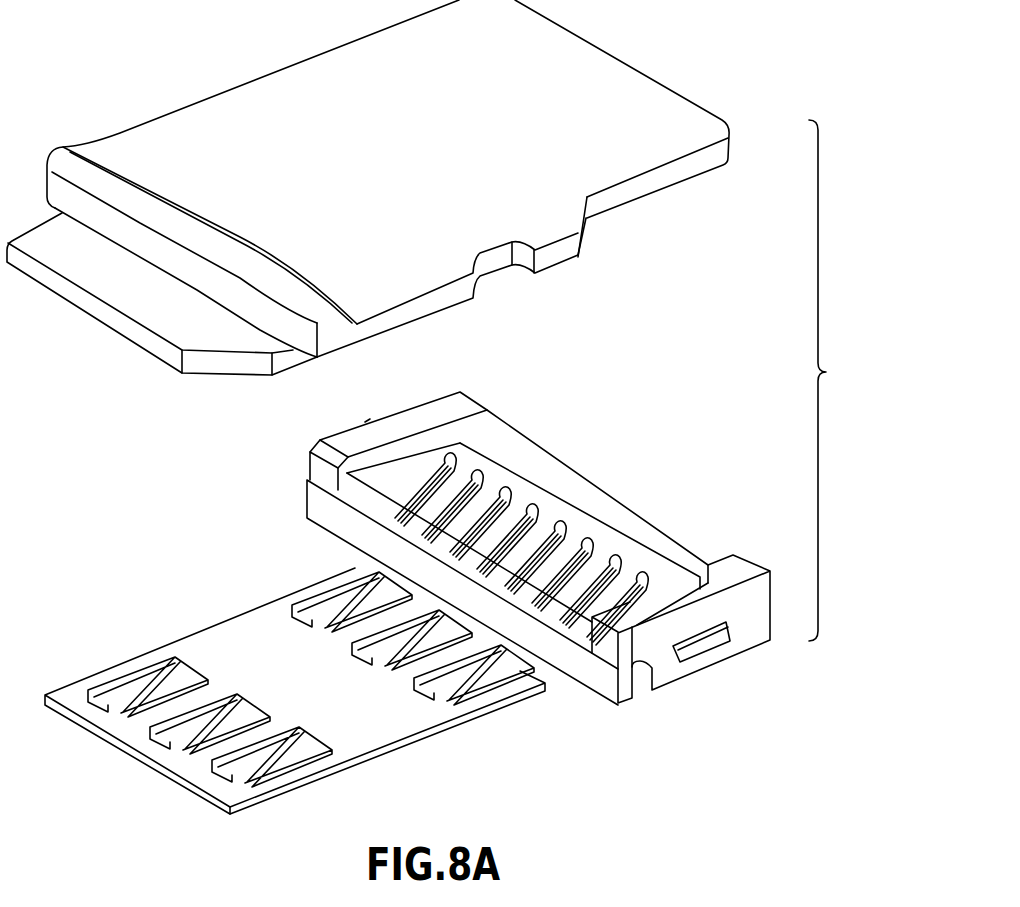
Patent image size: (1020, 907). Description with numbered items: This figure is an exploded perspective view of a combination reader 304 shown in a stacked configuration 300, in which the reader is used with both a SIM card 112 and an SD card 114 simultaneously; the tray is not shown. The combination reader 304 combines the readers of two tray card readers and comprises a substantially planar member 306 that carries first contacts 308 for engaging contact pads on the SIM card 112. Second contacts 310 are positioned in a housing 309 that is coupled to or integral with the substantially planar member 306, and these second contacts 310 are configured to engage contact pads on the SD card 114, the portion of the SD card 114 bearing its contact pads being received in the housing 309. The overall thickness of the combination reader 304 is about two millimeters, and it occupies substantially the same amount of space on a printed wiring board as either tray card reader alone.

The SD card 114 is at (653, 80).
The SIM card 112 is at (133, 347).
The stacked configuration 300 is at (841, 380).
The combination reader 304 is at (505, 548).
The substantially planar member 306 is at (295, 684).
The first contacts 308 is at (200, 720).
The housing 309 is at (320, 442).
The second contacts 310 is at (490, 483).